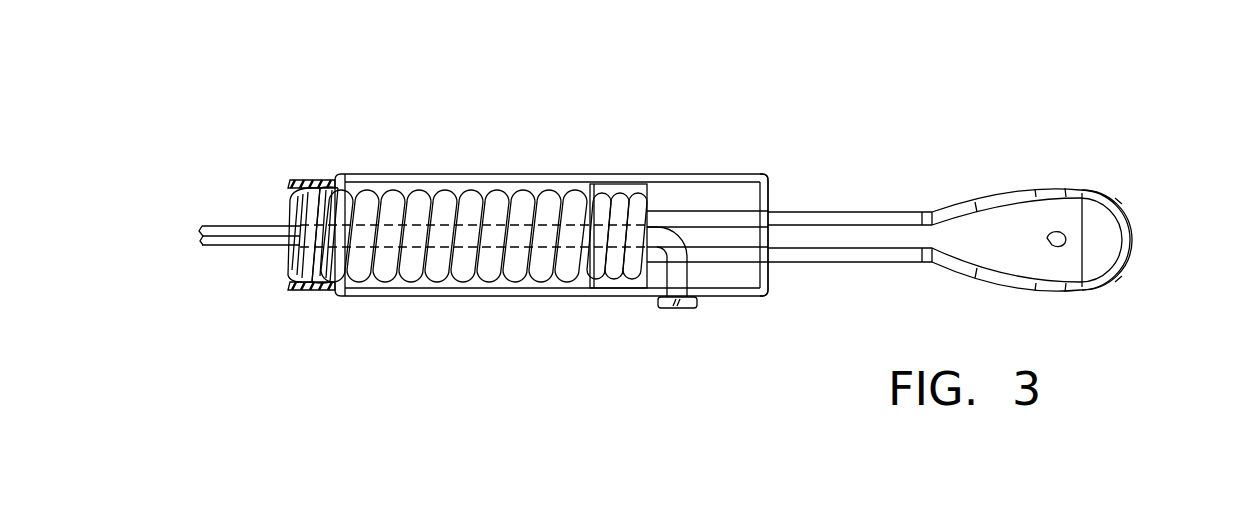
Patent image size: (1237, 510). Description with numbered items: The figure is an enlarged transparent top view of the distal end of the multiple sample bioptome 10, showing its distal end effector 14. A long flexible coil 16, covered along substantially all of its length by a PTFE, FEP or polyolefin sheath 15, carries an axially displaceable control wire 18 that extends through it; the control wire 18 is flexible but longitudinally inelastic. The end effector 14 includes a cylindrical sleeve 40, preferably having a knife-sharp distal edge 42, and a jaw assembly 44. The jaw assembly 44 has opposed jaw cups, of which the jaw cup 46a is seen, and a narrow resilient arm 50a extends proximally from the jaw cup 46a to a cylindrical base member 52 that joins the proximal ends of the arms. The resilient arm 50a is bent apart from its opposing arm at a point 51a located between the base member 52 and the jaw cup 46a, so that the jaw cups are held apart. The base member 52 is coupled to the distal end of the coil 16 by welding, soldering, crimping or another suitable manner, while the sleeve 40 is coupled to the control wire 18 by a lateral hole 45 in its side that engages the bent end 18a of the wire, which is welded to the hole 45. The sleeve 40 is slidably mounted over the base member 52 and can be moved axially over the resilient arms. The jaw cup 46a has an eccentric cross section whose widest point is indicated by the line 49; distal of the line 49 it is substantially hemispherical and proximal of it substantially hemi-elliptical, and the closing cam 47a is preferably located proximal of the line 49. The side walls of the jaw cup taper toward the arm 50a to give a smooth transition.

The multiple sample bioptome 10 is at (390, 90).
The distal end effector 14 is at (528, 337).
The sheath 15 is at (306, 180).
The flexible coil 16 is at (472, 194).
The control wire 18 is at (250, 232).
The bent end of the control wire 18a is at (687, 232).
The cylindrical sleeve 40 is at (548, 175).
The knife-sharp distal edge 42 is at (767, 180).
The jaw assembly 44 is at (980, 161).
The lateral hole 45 is at (682, 307).
The jaw cup 46a is at (1138, 247).
The closing cam 47a is at (1053, 231).
The line 49 is at (1084, 256).
The resilient arm 50a is at (842, 238).
The point 51a is at (792, 240).
The cylindrical base member 52 is at (618, 190).